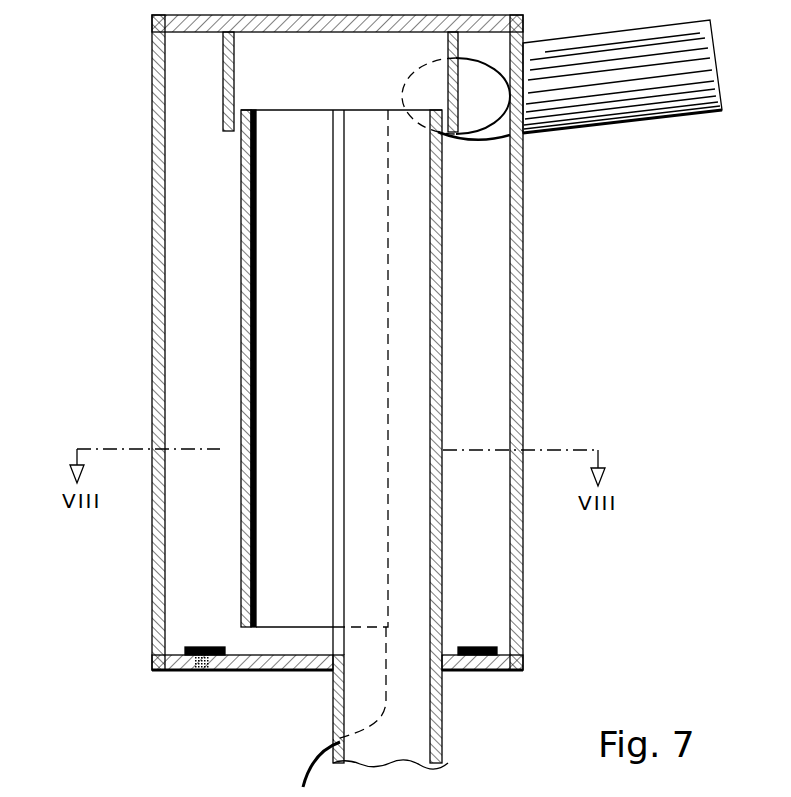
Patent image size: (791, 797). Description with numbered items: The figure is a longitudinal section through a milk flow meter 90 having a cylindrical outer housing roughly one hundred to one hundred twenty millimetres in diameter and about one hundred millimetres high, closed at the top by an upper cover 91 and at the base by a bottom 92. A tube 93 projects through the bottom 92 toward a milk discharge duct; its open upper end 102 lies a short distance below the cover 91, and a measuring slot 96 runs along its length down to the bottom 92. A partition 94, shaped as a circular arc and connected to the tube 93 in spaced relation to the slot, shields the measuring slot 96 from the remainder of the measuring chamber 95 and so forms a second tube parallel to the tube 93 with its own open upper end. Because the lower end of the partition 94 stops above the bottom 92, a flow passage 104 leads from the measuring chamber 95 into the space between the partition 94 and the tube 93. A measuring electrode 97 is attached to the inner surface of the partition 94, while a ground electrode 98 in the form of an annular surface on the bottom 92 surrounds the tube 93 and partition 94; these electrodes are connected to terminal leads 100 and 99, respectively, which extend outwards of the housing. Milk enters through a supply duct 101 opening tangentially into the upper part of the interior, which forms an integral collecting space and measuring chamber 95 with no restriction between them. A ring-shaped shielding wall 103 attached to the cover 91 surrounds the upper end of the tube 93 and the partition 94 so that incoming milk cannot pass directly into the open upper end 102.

The milk flow meter 90 is at (550, 275).
The upper cover 91 is at (467, 24).
The bottom 92 is at (288, 663).
The tube 93 is at (442, 397).
The partition 94 is at (242, 323).
The measuring chamber 95 is at (195, 242).
The measuring slot 96 is at (335, 370).
The measuring electrode 97 is at (242, 531).
The ground electrode 98 is at (205, 648).
The terminal lead 99 is at (203, 672).
The terminal lead 100 is at (307, 772).
The supply duct 101 is at (683, 87).
The open upper end 102 is at (368, 115).
The shielding wall 103 is at (223, 103).
The flow passage 104 is at (252, 640).